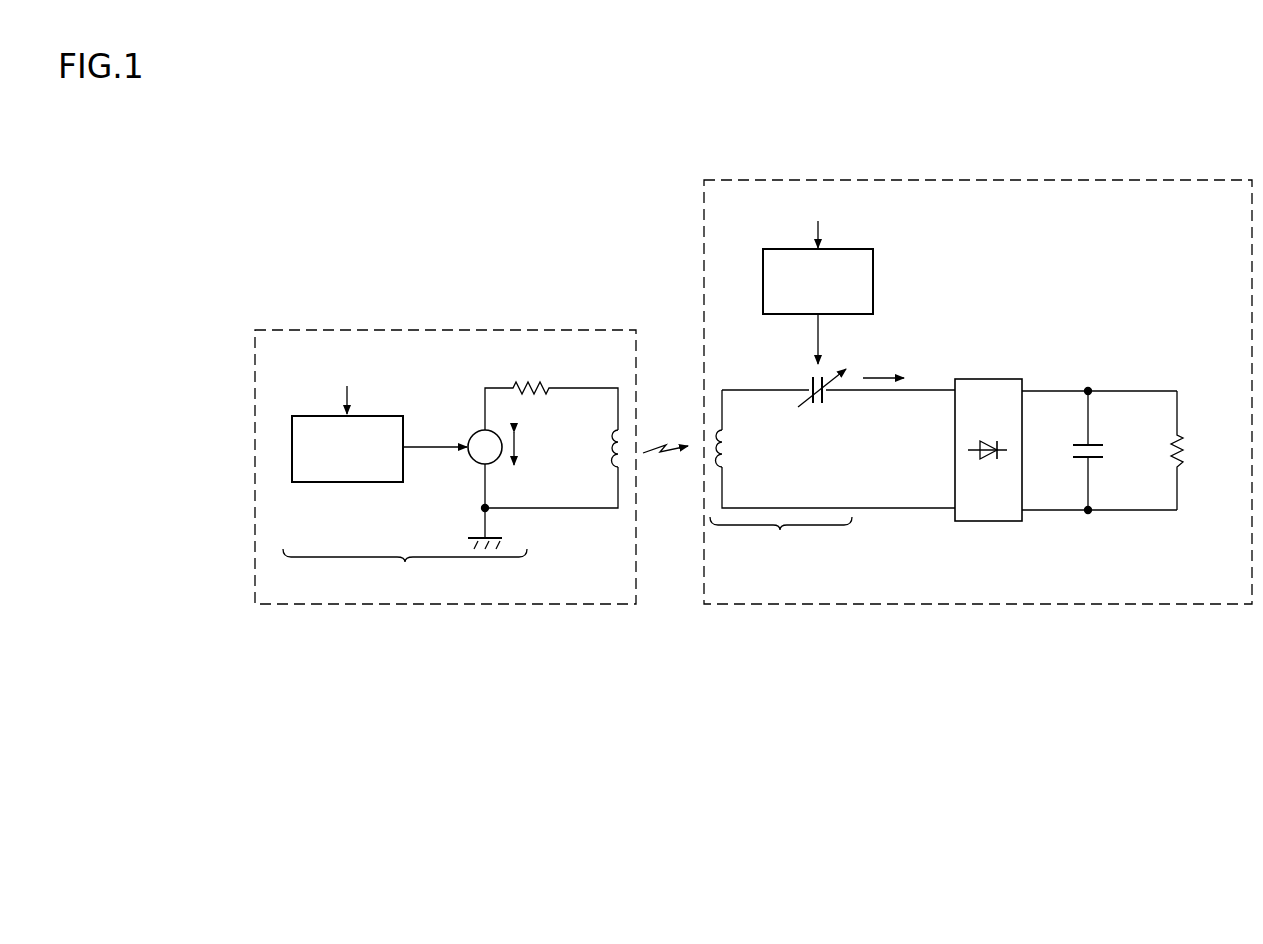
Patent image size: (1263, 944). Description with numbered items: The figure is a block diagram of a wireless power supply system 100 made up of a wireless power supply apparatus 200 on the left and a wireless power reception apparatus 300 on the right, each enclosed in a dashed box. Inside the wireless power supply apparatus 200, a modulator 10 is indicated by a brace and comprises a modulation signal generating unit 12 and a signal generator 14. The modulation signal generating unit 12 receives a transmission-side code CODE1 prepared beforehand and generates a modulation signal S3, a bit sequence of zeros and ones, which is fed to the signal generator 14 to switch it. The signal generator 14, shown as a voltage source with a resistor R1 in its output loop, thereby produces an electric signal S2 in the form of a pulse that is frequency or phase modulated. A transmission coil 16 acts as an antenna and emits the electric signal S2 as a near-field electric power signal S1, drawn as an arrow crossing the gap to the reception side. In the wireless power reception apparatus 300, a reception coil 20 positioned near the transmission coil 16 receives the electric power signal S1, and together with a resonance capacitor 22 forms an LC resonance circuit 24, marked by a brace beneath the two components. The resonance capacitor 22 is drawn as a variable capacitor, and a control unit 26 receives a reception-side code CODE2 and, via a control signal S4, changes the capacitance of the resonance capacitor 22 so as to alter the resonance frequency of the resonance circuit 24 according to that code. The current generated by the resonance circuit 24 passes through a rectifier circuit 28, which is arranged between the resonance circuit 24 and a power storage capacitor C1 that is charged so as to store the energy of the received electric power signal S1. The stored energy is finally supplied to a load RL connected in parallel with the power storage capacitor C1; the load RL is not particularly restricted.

The wireless power supply system 100 is at (689, 742).
The wireless power supply apparatus 200 is at (452, 604).
The wireless power reception apparatus 300 is at (883, 604).
The modulator 10 is at (405, 571).
The modulation signal generating unit 12 is at (346, 482).
The signal generator 14 is at (471, 462).
The transmission coil 16 is at (610, 450).
The reception coil 20 is at (729, 447).
The resonance capacitor 22 is at (818, 405).
The resonance circuit 24 is at (781, 539).
The control unit 26 is at (873, 282).
The rectifier circuit 28 is at (1000, 379).
The resistor R1 is at (540, 381).
The power storage capacitor C1 is at (1104, 452).
The load RL is at (1187, 452).
The electric power signal S1 is at (665, 463).
The electric signal S2 is at (513, 433).
The modulation signal S3 is at (435, 434).
The capacitance control signal S4 is at (834, 339).
The transmission-side code CODE1 is at (347, 387).
The reception-side code CODE2 is at (818, 222).